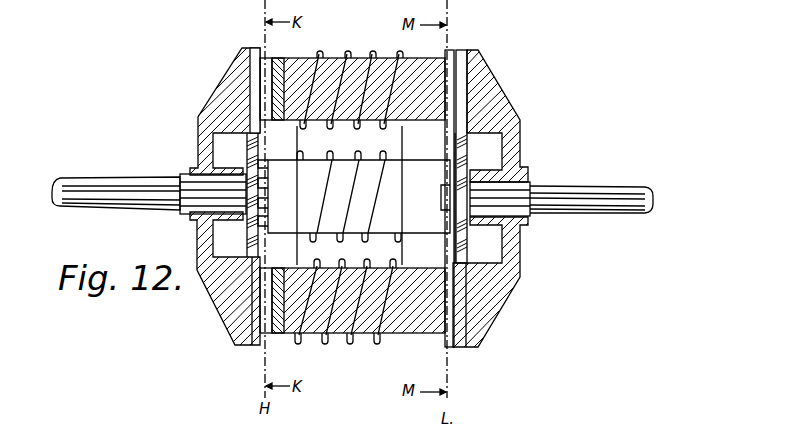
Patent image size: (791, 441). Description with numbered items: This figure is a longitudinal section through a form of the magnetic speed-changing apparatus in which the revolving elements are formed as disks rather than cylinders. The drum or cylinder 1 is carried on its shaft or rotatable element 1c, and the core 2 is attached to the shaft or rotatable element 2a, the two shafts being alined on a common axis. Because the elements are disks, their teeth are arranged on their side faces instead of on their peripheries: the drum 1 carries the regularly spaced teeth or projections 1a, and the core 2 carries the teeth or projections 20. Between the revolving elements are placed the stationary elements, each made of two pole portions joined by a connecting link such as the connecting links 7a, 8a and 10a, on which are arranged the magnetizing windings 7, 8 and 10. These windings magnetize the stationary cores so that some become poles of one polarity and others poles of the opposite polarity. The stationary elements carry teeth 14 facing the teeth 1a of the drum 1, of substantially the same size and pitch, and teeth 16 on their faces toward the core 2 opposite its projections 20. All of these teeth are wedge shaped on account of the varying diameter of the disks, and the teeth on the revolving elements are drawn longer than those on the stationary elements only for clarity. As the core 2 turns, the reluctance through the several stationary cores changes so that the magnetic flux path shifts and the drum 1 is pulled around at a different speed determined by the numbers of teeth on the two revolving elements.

The drum or cylinder 1 is at (228, 90).
The teeth or projections 1a is at (253, 48).
The shaft or rotatable element 1c is at (105, 188).
The core 2 is at (497, 100).
The shaft or rotatable element 2a is at (586, 194).
The magnetizing winding 7 is at (344, 56).
The connecting link 7a is at (366, 72).
The magnetizing winding 8 is at (364, 272).
The connecting link 8a is at (366, 336).
The magnetizing winding 10 is at (354, 160).
The connecting link 10a is at (429, 194).
The teeth or projections 14 is at (276, 60).
The teeth or projections 16 is at (452, 52).
The teeth or projections 20 is at (462, 76).